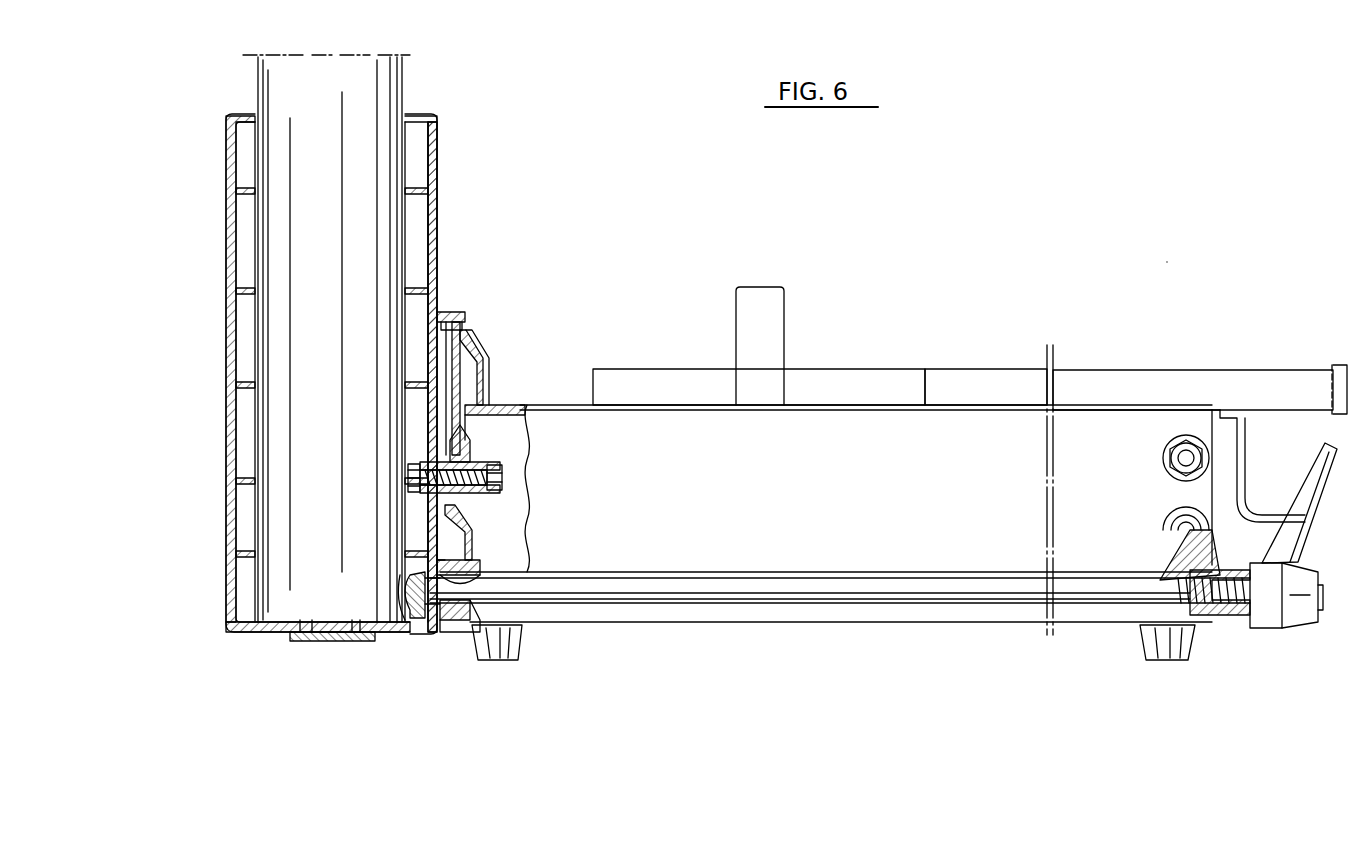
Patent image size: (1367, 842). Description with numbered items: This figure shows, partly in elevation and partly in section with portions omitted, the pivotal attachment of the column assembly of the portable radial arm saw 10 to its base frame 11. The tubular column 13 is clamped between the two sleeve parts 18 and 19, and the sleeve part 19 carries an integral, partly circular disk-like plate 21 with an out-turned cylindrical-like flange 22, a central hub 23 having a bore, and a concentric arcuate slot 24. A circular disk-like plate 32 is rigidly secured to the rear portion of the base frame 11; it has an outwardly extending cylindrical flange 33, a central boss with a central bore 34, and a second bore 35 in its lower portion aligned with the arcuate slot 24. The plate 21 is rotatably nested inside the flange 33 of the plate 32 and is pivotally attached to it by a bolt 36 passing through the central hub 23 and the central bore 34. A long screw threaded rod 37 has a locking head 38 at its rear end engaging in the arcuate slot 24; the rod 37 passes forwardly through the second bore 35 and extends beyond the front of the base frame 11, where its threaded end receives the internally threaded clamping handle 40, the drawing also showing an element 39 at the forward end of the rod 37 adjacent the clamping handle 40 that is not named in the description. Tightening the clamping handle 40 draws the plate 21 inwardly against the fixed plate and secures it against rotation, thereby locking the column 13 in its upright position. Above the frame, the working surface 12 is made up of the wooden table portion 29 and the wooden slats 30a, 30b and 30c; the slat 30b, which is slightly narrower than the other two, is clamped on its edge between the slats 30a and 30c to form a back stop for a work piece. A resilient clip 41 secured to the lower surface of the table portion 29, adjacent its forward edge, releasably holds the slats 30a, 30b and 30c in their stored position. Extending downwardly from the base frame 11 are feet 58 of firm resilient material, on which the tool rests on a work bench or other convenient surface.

The radial arm saw 10 is at (1170, 258).
The base frame 11 is at (904, 628).
The working surface 12 is at (1277, 362).
The column 13 is at (392, 78).
The sleeve part 18 is at (243, 128).
The sleeve part 19 is at (437, 150).
The disk-like plate 21 is at (430, 368).
The out-turned cylindrical-like flange 22 is at (462, 333).
The central hub 23 is at (437, 470).
The arcuate slot 24 is at (462, 586).
The table portion 29 is at (1100, 382).
The wooden slat 30a is at (676, 380).
The wooden slat 30b is at (770, 305).
The wooden slat 30c is at (886, 380).
The circular disk-like plate 32 is at (472, 400).
The cylindrical flange 33 is at (447, 313).
The central bore 34 is at (500, 450).
The second bore 35 is at (420, 585).
The bolt 36 is at (408, 480).
The screw threaded rod 37 is at (770, 600).
The locking head 38 is at (410, 625).
The nut 39 is at (1230, 614).
The clamping handle 40 is at (1270, 617).
The resilient clip 41 is at (1292, 518).
The feet 58 is at (515, 658).